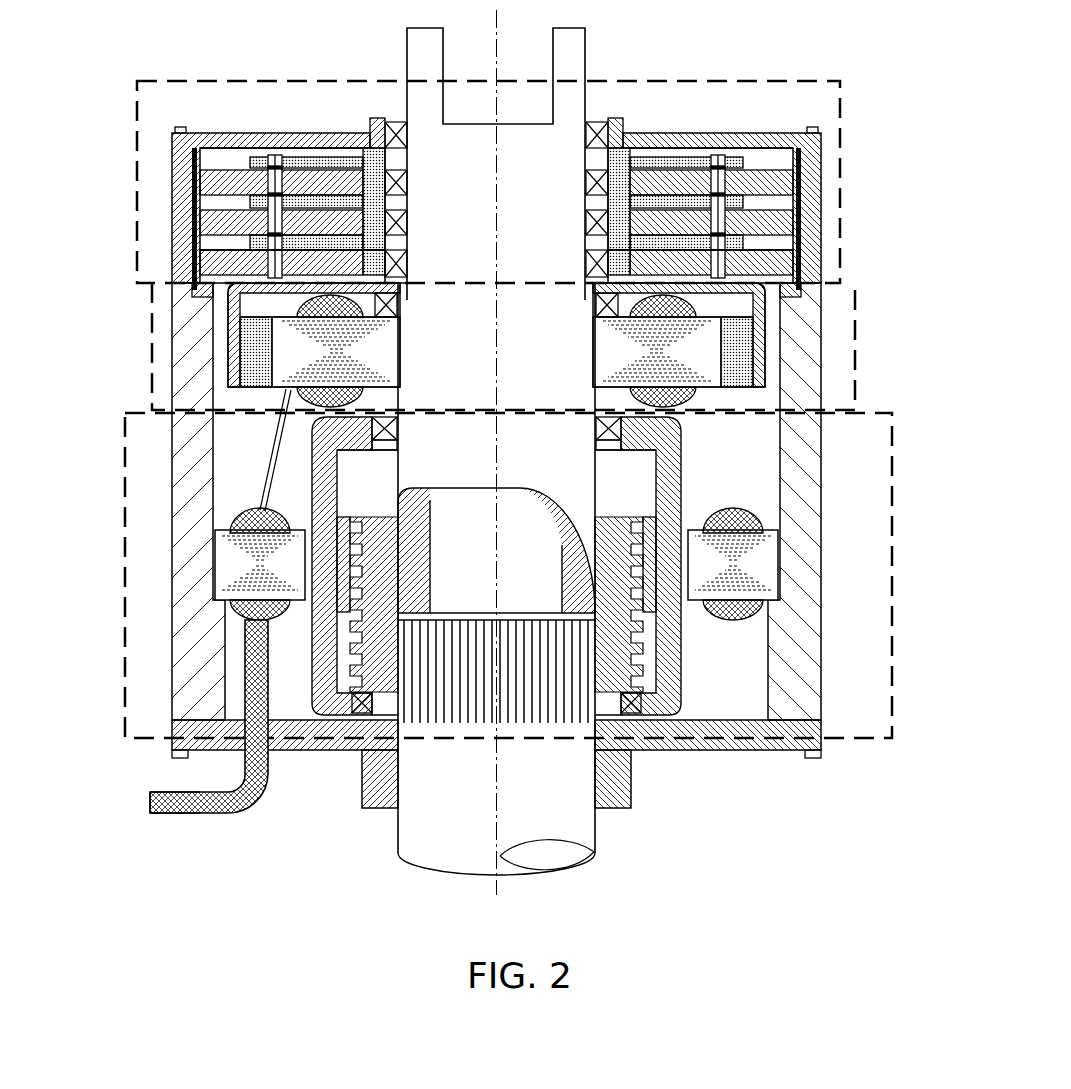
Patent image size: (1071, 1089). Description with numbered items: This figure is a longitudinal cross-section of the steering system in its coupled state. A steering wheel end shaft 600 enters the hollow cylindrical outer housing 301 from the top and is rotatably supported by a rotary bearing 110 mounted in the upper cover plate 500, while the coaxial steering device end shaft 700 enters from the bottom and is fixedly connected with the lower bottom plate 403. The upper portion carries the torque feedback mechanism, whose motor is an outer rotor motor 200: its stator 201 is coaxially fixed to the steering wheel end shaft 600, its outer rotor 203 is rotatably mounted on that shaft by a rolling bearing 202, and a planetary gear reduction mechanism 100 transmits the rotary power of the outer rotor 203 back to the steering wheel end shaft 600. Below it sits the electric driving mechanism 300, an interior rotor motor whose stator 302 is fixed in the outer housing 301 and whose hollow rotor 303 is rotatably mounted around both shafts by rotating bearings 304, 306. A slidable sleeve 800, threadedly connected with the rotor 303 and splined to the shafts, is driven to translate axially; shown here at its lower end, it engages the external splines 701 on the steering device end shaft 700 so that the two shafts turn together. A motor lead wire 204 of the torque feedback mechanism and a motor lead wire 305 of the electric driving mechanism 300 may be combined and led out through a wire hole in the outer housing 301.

The planetary gear reduction mechanism 100 is at (840, 177).
The rotary bearing 110 is at (370, 127).
The outer rotor motor 200 is at (857, 347).
The stator 201 is at (350, 347).
The rolling bearing 202 is at (373, 300).
The outer rotor 203 is at (240, 367).
The motor lead wire 204 is at (288, 390).
The electric driving mechanism 300 is at (893, 537).
The outer housing 301 is at (800, 640).
The stator 302 is at (238, 603).
The rotor 303 is at (250, 560).
The rotating bearing 304 is at (360, 750).
The motor lead wire 305 is at (203, 815).
The rotating bearing 306 is at (317, 460).
The lower bottom plate 403 is at (790, 740).
The upper cover plate 500 is at (653, 140).
The steering wheel end shaft 600 is at (572, 53).
The steering device end shaft 700 is at (560, 815).
The external splines 701 is at (455, 670).
The slidable sleeve 800 is at (258, 675).